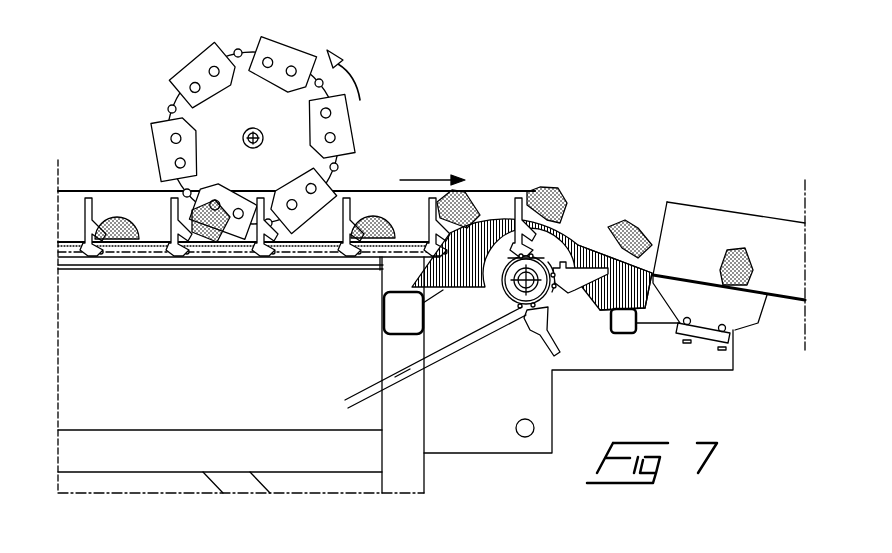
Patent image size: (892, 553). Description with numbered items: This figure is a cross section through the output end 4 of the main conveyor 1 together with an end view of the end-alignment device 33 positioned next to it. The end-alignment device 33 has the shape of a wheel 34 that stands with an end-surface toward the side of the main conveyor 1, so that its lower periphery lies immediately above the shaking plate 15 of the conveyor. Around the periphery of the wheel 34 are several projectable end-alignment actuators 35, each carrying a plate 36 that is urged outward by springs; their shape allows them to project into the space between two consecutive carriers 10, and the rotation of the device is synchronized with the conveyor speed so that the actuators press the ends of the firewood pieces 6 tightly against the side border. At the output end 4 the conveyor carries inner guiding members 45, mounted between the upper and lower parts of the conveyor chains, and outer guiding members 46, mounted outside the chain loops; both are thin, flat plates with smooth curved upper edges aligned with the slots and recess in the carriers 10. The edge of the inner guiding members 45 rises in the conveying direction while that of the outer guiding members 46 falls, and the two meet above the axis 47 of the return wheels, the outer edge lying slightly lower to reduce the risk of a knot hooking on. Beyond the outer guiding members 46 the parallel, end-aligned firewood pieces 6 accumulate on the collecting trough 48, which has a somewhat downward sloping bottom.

The main conveyor 1 is at (208, 272).
The output end 4 is at (572, 155).
The firewood piece 6 is at (556, 198).
The carrier 10 is at (88, 212).
The shaking plate 15 is at (156, 240).
The end-alignment device 33 is at (253, 136).
The wheel 34 is at (168, 107).
The end-alignment actuator 35 is at (377, 123).
The plate 36 is at (345, 110).
The inner guiding member 45 is at (455, 265).
The outer guiding member 46 is at (598, 292).
The axis of rotation for return wheels 47 is at (525, 282).
The collecting trough 48 is at (782, 288).